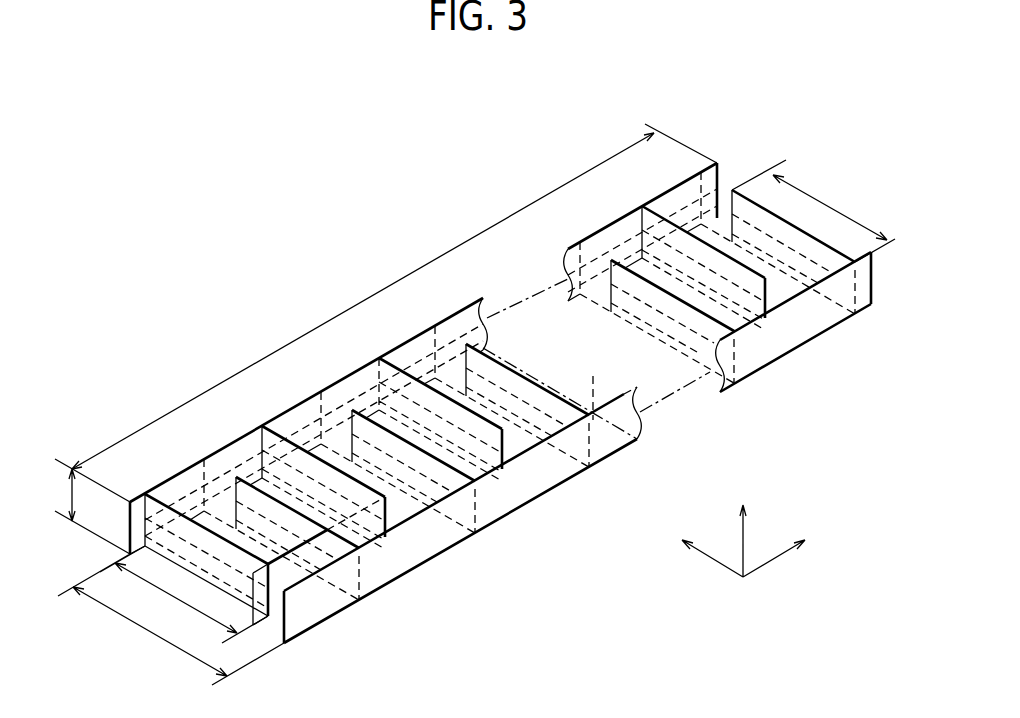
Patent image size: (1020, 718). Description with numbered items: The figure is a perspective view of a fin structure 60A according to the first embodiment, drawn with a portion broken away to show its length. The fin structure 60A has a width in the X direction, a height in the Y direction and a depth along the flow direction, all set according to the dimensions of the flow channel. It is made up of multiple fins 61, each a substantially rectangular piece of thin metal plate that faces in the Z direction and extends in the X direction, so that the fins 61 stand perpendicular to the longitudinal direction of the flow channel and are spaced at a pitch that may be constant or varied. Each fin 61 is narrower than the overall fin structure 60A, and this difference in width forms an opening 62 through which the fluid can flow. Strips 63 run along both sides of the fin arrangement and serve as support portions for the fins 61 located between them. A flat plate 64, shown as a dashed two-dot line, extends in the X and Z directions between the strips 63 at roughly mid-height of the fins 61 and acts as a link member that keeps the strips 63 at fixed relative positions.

The fin structure 60A is at (296, 191).
The fin 61 is at (343, 405).
The opening 62 is at (215, 458).
The strip 63 is at (472, 344).
The flat plate 64 is at (512, 492).